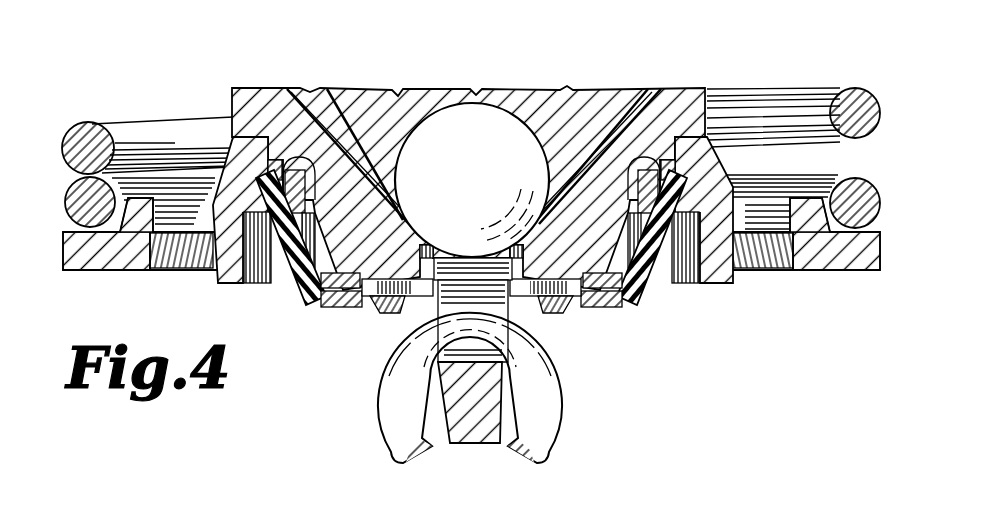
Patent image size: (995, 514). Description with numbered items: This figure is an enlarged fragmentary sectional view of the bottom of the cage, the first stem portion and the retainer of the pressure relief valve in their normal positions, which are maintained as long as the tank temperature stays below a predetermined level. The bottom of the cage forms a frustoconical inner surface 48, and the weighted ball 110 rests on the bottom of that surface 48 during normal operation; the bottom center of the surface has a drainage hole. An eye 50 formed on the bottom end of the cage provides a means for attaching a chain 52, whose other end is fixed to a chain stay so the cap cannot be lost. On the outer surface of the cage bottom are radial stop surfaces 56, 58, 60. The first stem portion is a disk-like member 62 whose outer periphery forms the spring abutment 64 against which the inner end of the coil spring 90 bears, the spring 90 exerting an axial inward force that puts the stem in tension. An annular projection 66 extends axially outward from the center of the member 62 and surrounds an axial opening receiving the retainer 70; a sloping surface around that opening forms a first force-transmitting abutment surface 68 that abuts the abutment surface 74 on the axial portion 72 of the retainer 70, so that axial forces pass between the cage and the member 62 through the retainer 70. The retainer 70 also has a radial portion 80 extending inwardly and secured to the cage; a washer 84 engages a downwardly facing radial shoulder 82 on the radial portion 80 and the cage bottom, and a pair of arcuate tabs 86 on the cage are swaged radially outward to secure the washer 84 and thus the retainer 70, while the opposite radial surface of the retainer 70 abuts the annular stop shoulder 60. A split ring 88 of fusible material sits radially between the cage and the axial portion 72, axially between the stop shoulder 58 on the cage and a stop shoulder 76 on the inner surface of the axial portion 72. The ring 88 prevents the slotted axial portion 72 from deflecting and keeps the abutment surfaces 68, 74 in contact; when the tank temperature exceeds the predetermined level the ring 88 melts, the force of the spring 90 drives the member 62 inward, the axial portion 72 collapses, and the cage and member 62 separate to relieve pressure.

The frustoconical inner surface 48 is at (620, 135).
The eye 50 is at (478, 440).
The chain 52 is at (405, 434).
The radial stop surface 56 is at (233, 150).
The annular stop shoulder 58 is at (316, 168).
The annular stop shoulder 60 is at (368, 200).
The first stem portion 62 is at (833, 272).
The spring abutment 64 is at (65, 233).
The annular projection 66 is at (728, 170).
The first force-transmitting abutment surface 68 is at (686, 283).
The retainer 70 is at (273, 305).
The axial portion 72 is at (293, 157).
The abutment surface 74 is at (713, 155).
The stop shoulder 76 is at (655, 215).
The radial portion 80 is at (327, 313).
The radial shoulder 82 is at (607, 305).
The washer 84 is at (353, 303).
The arcuate tabs 86 is at (567, 317).
The split ring 88 is at (650, 178).
The coil spring 90 is at (142, 122).
The weighted ball 110 is at (494, 178).